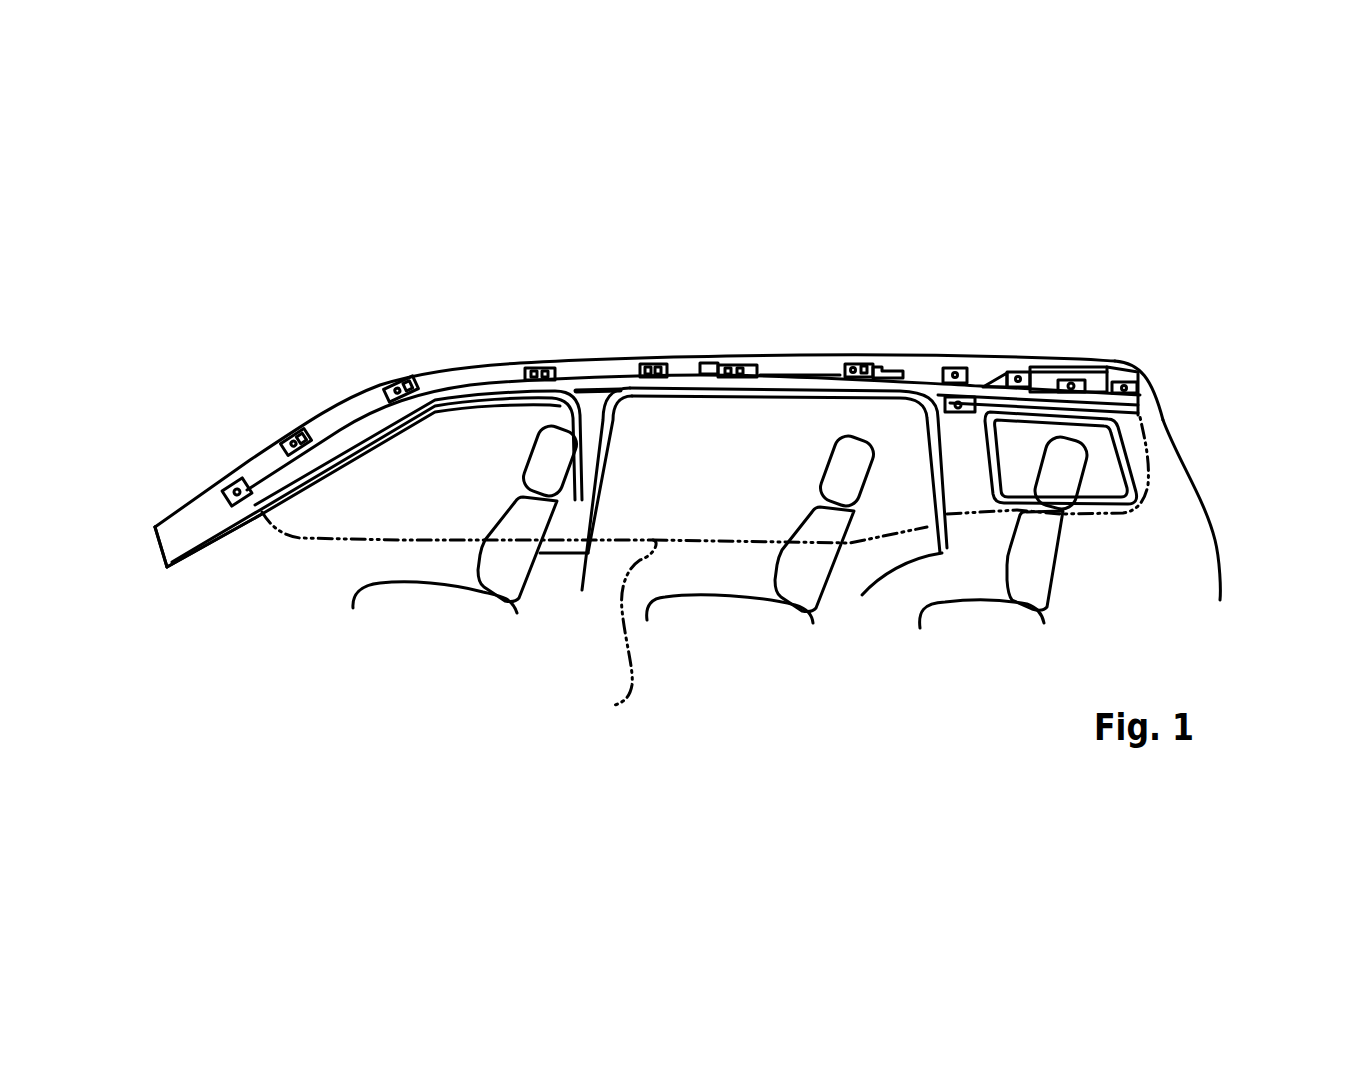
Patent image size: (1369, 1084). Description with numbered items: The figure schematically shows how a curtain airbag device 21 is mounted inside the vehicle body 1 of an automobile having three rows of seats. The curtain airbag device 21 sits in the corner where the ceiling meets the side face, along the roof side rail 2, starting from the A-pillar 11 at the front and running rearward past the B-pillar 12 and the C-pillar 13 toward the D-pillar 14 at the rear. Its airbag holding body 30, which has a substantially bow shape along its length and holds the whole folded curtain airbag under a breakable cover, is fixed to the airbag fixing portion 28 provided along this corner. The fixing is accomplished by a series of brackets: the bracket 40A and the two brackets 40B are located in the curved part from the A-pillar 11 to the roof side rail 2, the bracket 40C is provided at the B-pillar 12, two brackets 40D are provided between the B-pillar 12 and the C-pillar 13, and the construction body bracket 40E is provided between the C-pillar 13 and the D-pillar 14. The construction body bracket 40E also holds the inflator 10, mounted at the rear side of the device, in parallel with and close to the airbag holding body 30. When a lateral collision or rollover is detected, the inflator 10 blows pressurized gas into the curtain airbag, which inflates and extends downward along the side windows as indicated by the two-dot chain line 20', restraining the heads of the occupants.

The vehicle body 1 is at (1223, 472).
The roof side rail 2 is at (487, 372).
The inflator 10 is at (1097, 370).
The A-pillar 11 is at (195, 512).
The B-pillar 12 is at (583, 472).
The C-pillar 13 is at (953, 453).
The D-pillar 14 is at (1163, 442).
The two-dot chain line 20' is at (705, 575).
The curtain airbag device 21 is at (1150, 400).
The airbag fixing portion 28 is at (797, 366).
The airbag holding body 30 is at (363, 410).
The bracket 40A is at (216, 482).
The bracket 40B is at (277, 432).
The bracket 40C is at (591, 355).
The bracket 40D is at (713, 360).
The construction body bracket 40E is at (1008, 356).